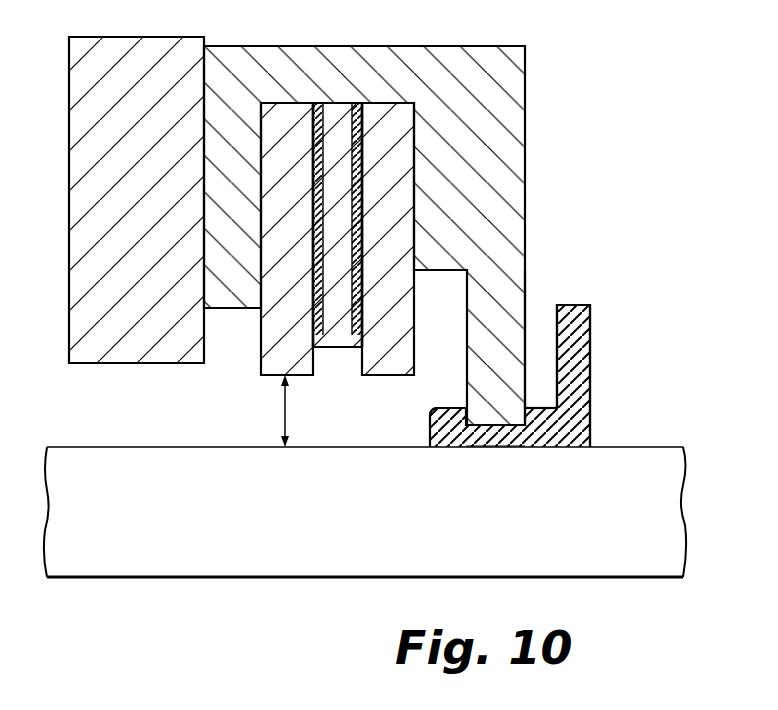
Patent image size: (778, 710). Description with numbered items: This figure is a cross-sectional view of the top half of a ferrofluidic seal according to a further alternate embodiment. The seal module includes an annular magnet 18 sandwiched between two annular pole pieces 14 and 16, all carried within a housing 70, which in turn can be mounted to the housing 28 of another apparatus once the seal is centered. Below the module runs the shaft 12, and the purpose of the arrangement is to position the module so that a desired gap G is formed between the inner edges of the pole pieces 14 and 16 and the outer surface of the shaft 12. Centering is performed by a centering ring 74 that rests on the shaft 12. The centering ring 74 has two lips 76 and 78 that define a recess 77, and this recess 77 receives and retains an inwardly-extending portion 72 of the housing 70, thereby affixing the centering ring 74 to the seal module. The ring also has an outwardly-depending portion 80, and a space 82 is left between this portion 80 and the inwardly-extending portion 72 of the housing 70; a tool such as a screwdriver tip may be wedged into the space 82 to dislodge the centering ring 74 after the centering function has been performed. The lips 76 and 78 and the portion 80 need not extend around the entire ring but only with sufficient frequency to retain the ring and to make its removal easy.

The shaft 12 is at (215, 567).
The annular pole piece 14 is at (403, 181).
The annular pole piece 16 is at (303, 181).
The annular magnet 18 is at (350, 227).
The housing of another apparatus 28 is at (106, 48).
The housing 70 is at (518, 86).
The inwardly-extending portion 72 is at (508, 288).
The centering ring 74 is at (591, 418).
The lip 76 is at (432, 412).
The recess 77 is at (494, 428).
The lip 78 is at (537, 407).
The outwardly-depending portion 80 is at (591, 320).
The space 82 is at (540, 322).
The gap G is at (270, 409).